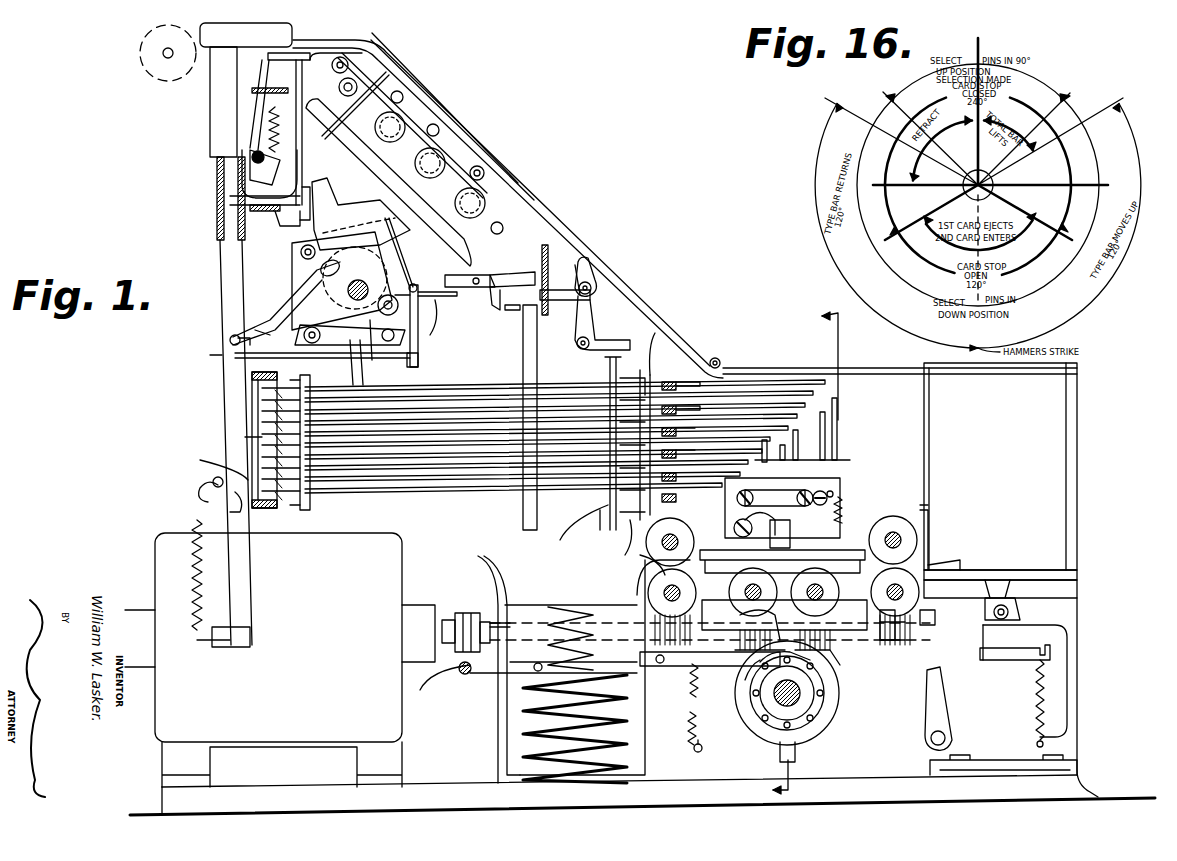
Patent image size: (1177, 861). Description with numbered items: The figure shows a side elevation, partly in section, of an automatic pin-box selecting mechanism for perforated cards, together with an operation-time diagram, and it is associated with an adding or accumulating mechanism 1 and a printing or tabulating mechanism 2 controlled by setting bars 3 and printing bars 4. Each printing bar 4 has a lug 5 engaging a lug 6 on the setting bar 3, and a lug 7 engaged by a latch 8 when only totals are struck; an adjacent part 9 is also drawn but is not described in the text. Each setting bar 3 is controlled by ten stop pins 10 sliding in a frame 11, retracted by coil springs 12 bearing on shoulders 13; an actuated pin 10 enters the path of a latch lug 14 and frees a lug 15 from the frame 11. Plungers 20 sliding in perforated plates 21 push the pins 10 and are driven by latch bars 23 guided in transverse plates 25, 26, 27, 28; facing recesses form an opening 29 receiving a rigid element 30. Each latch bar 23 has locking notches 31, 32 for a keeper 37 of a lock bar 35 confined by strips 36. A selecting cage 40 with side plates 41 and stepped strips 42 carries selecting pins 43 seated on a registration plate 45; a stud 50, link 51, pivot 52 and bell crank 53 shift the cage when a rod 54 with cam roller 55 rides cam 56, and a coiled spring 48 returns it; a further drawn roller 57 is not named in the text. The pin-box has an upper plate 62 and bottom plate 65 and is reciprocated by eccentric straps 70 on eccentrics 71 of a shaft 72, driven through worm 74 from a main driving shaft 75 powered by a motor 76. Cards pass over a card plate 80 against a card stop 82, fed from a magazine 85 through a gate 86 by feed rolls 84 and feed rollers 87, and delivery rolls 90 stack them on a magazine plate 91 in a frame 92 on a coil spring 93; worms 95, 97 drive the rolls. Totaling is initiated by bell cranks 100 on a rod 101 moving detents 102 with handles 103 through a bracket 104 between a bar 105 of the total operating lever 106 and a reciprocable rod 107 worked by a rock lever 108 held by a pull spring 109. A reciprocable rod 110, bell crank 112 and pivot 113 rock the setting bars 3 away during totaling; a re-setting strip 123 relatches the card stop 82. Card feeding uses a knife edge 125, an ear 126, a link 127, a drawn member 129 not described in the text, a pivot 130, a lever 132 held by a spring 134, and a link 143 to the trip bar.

The adding or accumulating mechanism 1 is at (455, 140).
The printing or tabulating mechanism 2 is at (205, 72).
The setting bar 3 is at (222, 358).
The printing bar 4 is at (222, 272).
The lug 5 is at (238, 340).
The lug 6 is at (260, 324).
The lug 7 is at (228, 512).
The latch 8 is at (200, 492).
The bar 9 is at (700, 640).
The stop pin 10 is at (270, 393).
The frame 11 is at (250, 438).
The coil spring 12 is at (255, 390).
The shoulder 13 is at (255, 430).
The latch lug 14 is at (208, 465).
The lug 15 is at (220, 520).
The plunger 20 is at (375, 512).
The perforated plate 21 is at (290, 312).
The latch bar 23 is at (800, 388).
The transverse plate 25 is at (778, 385).
The transverse plate 26 is at (738, 412).
The transverse plate 27 is at (670, 540).
The transverse plate 28 is at (678, 380).
The rectangular opening 29 is at (718, 352).
The rigid element 30 is at (686, 385).
The locking notch 31 is at (628, 539).
The locking notch 32 is at (587, 527).
The lock bar 35 is at (645, 372).
The transverse rigid strip 36 is at (605, 453).
The keeper 37 is at (608, 426).
The selecting cage 40 is at (834, 438).
The side plate 41 is at (835, 460).
The transverse perforated strip 42 is at (826, 418).
The selecting pin 43 is at (838, 398).
The registration plate 45 is at (893, 540).
The coiled spring 48 is at (844, 494).
The stud 50 is at (823, 487).
The link 51 is at (775, 495).
The pivot 52 is at (782, 508).
The bell crank 53 is at (773, 518).
The rod 54 is at (790, 530).
The cam roller 55 is at (805, 660).
The cam 56 is at (800, 693).
The roller 57 is at (788, 592).
The upper plate 62 is at (893, 645).
The bottom plate 65 is at (782, 627).
The eccentric strap 70 is at (808, 735).
The eccentric 71 is at (823, 715).
The shaft 72 is at (816, 705).
The worm 74 is at (738, 660).
The main driving shaft 75 is at (688, 664).
The motor 76 is at (295, 660).
The card receiving plate 80 is at (895, 592).
The card stop 82 is at (672, 593).
The feed roll 84 is at (910, 532).
The card magazine 85 is at (1000, 466).
The gate 86 is at (941, 540).
The feed roller 87 is at (831, 659).
The delivery feed roll 90 is at (641, 563).
The card receiving magazine plate 91 is at (525, 580).
The frame 92 is at (648, 710).
The coil spring 93 is at (525, 710).
The worm 95 is at (910, 640).
The worm 97 is at (679, 680).
The bell crank 100 is at (592, 292).
The rod 101 is at (592, 330).
The detent 102 is at (575, 270).
The handle 103 is at (590, 272).
The bracket 104 is at (545, 245).
The bar 105 is at (512, 281).
The total operating lever 106 is at (456, 274).
The reciprocable rod 107 is at (523, 334).
The rock lever 108 is at (745, 685).
The pull spring 109 is at (740, 742).
The reciprocable rod 110 is at (400, 352).
The bell crank 112 is at (416, 320).
The pivot 113 is at (432, 325).
The re-setting strip 123 is at (753, 592).
The knife edge 125 is at (1060, 572).
The ear 126 is at (1000, 588).
The link 127 is at (1025, 667).
The lever 129 is at (945, 695).
The pivot 130 is at (945, 738).
The lever 132 is at (1015, 663).
The spring 134 is at (1035, 700).
The link 143 is at (451, 322).